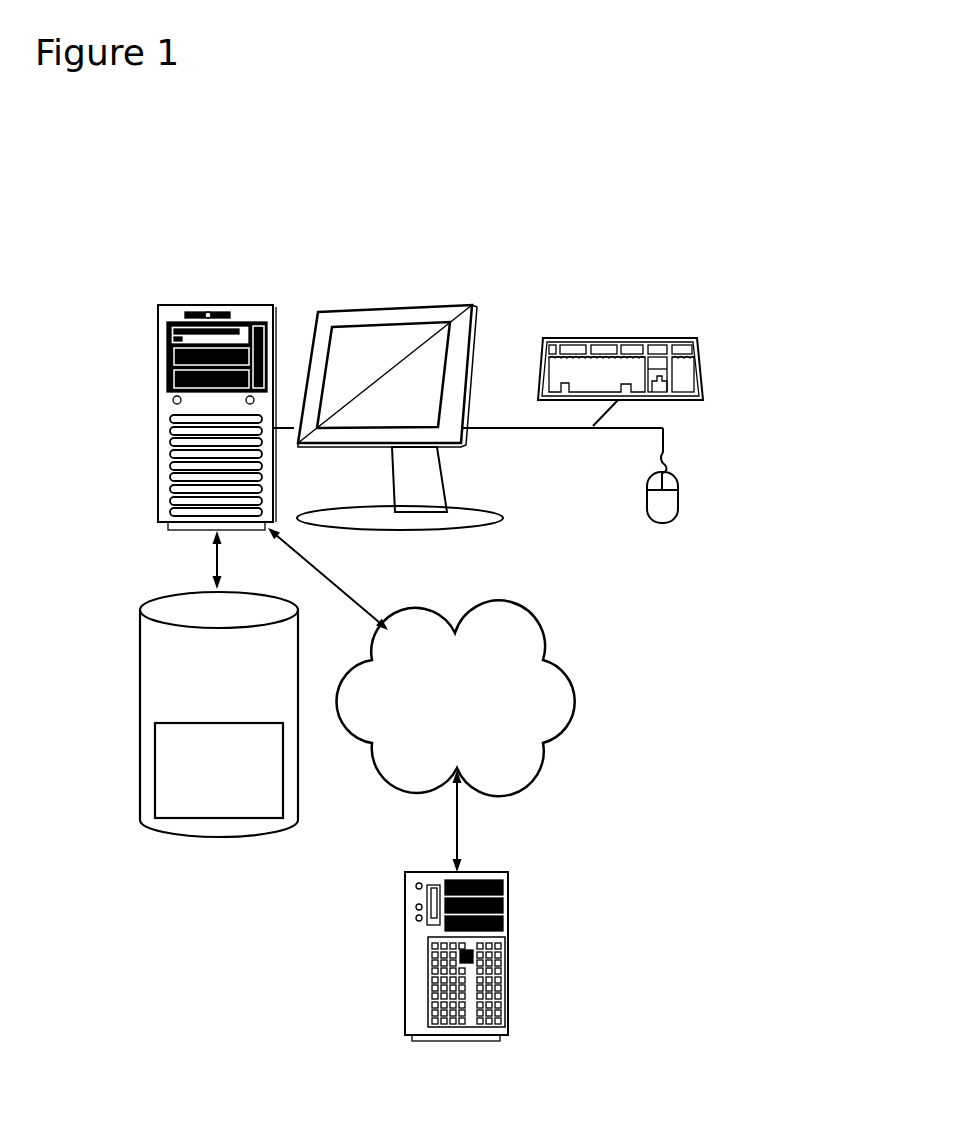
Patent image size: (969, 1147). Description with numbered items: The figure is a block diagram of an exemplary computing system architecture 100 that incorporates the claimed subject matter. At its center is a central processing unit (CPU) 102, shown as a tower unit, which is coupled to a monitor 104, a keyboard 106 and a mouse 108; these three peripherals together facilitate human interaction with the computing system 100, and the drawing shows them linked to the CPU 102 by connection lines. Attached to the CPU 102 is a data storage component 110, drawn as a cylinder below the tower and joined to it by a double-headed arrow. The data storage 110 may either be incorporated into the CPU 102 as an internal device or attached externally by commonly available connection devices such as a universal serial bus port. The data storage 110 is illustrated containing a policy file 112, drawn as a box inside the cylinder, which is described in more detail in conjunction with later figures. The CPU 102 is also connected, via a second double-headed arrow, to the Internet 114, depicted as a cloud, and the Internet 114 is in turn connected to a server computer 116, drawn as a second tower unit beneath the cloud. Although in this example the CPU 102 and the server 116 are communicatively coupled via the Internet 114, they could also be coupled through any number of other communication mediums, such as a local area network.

The computing system architecture 100 is at (392, 182).
The central processing unit 102 is at (260, 305).
The monitor 104 is at (472, 373).
The keyboard 106 is at (681, 338).
The mouse 108 is at (660, 528).
The data storage component 110 is at (219, 714).
The policy file 112 is at (219, 770).
The Internet 114 is at (455, 698).
The server computer 116 is at (405, 957).